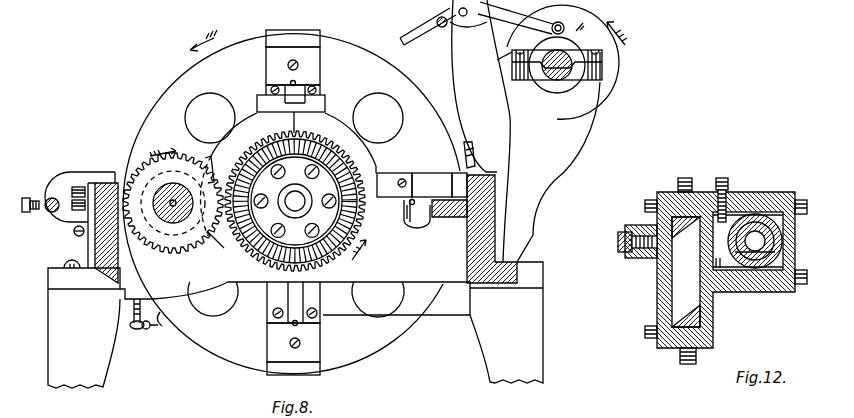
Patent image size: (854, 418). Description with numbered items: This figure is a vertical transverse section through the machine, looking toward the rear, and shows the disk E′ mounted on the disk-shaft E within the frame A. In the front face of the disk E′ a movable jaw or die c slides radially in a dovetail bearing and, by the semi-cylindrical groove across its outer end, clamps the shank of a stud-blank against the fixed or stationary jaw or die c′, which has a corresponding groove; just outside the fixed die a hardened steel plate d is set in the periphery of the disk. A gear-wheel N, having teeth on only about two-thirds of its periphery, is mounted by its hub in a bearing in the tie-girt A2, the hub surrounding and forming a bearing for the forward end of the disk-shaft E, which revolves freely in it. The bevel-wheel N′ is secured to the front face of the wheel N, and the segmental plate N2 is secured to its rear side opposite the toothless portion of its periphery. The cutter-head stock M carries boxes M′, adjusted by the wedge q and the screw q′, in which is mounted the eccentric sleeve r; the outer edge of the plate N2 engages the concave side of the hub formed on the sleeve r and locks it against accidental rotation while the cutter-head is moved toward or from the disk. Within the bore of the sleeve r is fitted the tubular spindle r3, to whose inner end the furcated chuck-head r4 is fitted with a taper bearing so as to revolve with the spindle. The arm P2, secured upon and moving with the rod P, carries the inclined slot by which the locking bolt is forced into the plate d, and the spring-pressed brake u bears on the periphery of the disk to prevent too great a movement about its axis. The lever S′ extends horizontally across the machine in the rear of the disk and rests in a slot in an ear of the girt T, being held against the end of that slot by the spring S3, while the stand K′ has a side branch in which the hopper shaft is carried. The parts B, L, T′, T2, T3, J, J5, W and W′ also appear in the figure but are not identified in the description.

In FIG. 8, the disk E′ is at (291, 202).
In FIG. 8, the tie-girt A2 is at (259, 280).
In FIG. 8, the base standard B is at (295, 325).
In FIG. 8, the frame A is at (281, 227).
In FIG. 12, the frame A is at (720, 271).
In FIG. 8, the arm P2 is at (80, 204).
In FIG. 8, the rod P is at (46, 212).
In FIG. 12, the rod P is at (633, 227).
In FIG. 8, the spring S3 is at (137, 330).
In FIG. 8, the lever S′ is at (162, 330).
In FIG. 8, the hardened steel plate d is at (366, 203).
In FIG. 8, the fixed jaw or die c′ is at (359, 204).
In FIG. 8, the movable jaw or die c is at (400, 185).
In FIG. 8, the bracket L is at (316, 134).
In FIG. 8, the segmental plate N2 is at (228, 180).
In FIG. 8, the gear-wheel N is at (343, 256).
In FIG. 8, the bevel-wheel N′ is at (295, 201).
In FIG. 8, the disk-shaft E is at (295, 201).
In FIG. 8, the girt T is at (172, 224).
In FIG. 8, the pinion pitch circle T′ is at (173, 200).
In FIG. 8, the pinion hub T3 is at (177, 190).
In FIG. 8, the eccentric sleeve r is at (170, 204).
In FIG. 12, the eccentric sleeve r is at (768, 215).
In FIG. 8, the pinion bracket T2 is at (205, 163).
In FIG. 8, the stand K′ is at (539, 131).
In FIG. 8, the journal bearing J is at (557, 65).
In FIG. 8, the link W is at (507, 18).
In FIG. 8, the link rod W′ is at (427, 26).
In FIG. 8, the stop J5 is at (583, 24).
In FIG. 8, the spring-pressed brake u is at (462, 148).
In FIG. 12, the cutter-head stock M is at (760, 254).
In FIG. 12, the boxes M′ is at (741, 224).
In FIG. 12, the tubular spindle r3 is at (767, 240).
In FIG. 12, the furcated chuck-head r4 is at (776, 252).
In FIG. 12, the screw q′ is at (724, 178).
In FIG. 12, the wedge q is at (718, 270).